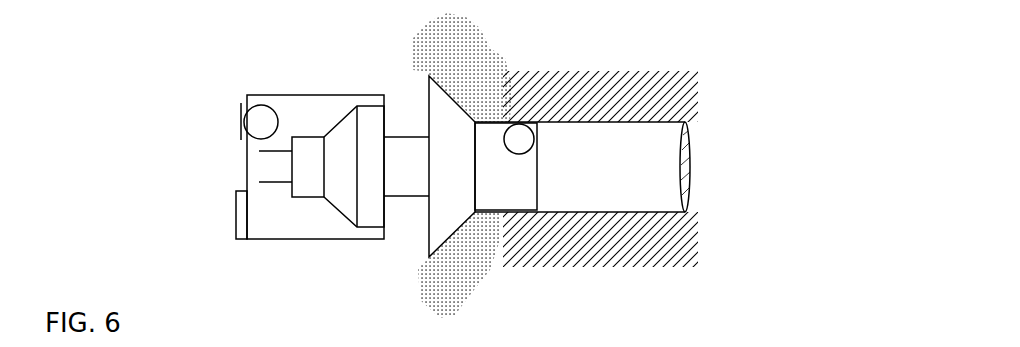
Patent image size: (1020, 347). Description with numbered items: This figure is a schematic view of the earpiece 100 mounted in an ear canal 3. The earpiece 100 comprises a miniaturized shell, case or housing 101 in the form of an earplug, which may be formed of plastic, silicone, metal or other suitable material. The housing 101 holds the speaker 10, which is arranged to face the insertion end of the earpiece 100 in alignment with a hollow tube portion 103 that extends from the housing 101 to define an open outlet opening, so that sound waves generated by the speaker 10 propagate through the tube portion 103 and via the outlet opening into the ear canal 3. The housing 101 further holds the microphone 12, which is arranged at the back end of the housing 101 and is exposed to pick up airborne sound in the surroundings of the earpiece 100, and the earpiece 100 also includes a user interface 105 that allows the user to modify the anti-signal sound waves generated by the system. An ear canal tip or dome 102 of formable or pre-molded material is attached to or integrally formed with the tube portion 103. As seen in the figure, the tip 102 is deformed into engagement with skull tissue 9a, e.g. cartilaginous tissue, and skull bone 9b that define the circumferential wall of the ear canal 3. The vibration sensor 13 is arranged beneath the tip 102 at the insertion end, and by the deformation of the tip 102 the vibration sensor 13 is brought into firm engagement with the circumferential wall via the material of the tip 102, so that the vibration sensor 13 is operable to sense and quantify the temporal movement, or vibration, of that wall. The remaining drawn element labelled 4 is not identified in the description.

The earpiece 100 is at (181, 120).
The housing 101 is at (247, 167).
The user interface 105 is at (237, 210).
The microphone 12 is at (258, 121).
The speaker 10 is at (340, 143).
The tube portion 103 is at (402, 165).
The skull tissue 9a is at (442, 288).
The tip 102 is at (450, 122).
The skull bone 9b is at (613, 253).
The ear canal 3 is at (603, 186).
The tube end 4 is at (690, 150).
The vibration sensor 13 is at (519, 135).